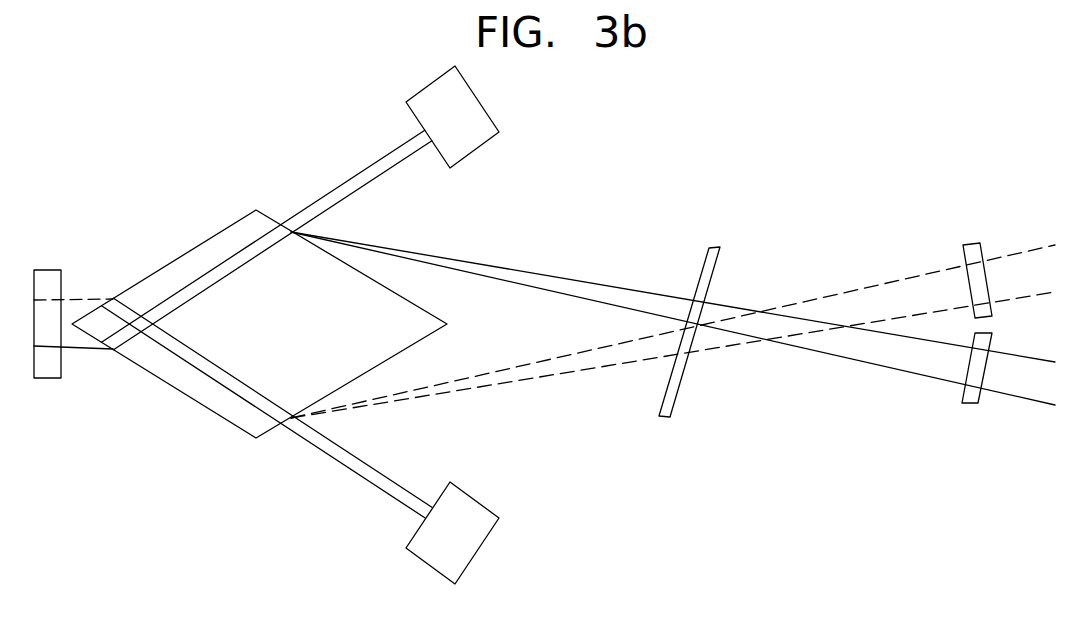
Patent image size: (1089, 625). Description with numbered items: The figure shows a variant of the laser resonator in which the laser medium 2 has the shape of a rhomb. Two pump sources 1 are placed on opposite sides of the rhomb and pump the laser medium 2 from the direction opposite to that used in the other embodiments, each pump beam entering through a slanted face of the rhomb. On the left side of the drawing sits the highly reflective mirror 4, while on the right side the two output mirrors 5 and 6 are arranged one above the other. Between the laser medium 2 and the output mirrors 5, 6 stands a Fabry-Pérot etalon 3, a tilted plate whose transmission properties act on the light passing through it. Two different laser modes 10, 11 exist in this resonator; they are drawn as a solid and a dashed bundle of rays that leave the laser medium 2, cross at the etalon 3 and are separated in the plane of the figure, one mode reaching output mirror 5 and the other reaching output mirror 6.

The pump sources 1 is at (472, 104).
The laser medium 2 is at (205, 250).
The Fabry-Pérot etalon 3 is at (705, 263).
The highly reflective mirror 4 is at (62, 285).
The output mirror 5 is at (980, 252).
The output mirror 6 is at (978, 398).
The laser mode 10 is at (552, 277).
The laser mode 11 is at (553, 375).